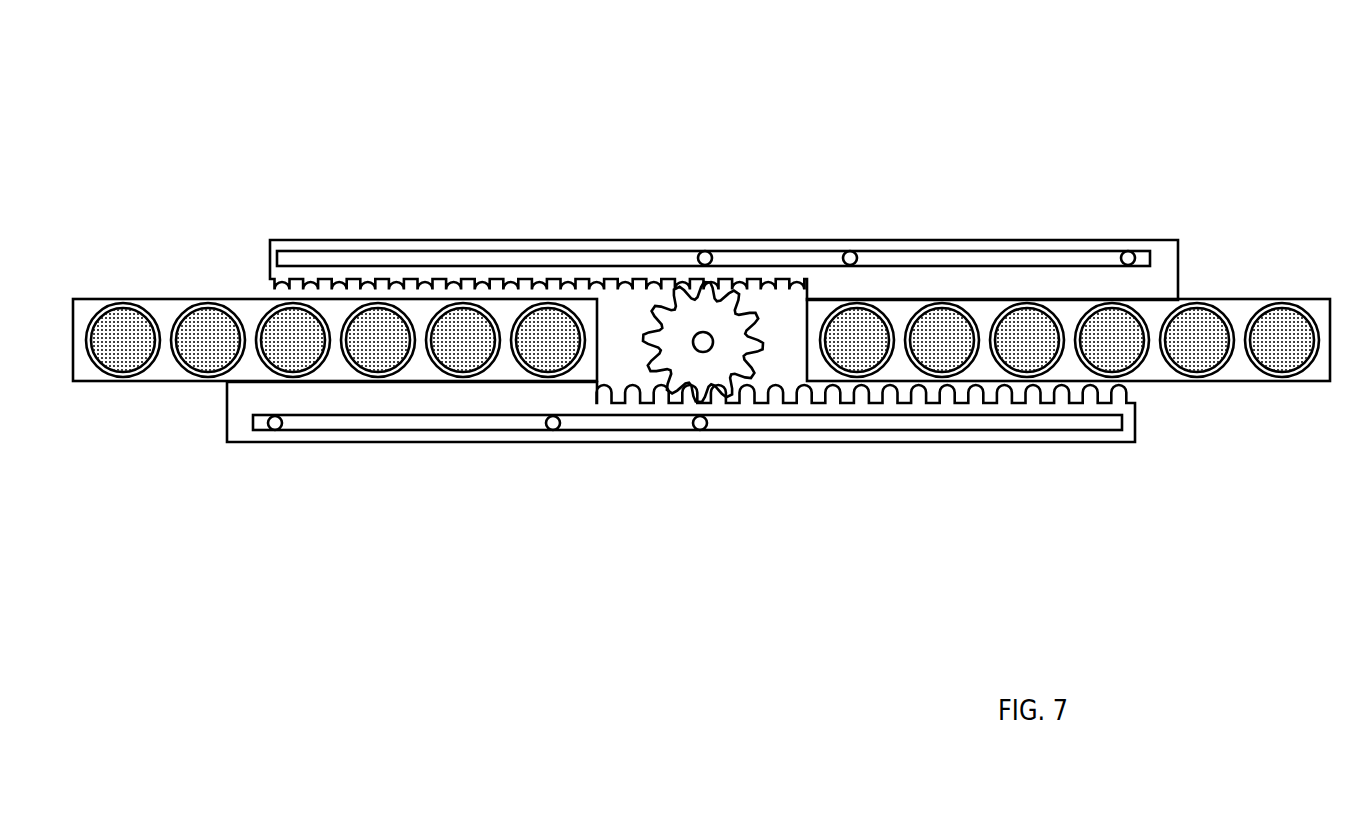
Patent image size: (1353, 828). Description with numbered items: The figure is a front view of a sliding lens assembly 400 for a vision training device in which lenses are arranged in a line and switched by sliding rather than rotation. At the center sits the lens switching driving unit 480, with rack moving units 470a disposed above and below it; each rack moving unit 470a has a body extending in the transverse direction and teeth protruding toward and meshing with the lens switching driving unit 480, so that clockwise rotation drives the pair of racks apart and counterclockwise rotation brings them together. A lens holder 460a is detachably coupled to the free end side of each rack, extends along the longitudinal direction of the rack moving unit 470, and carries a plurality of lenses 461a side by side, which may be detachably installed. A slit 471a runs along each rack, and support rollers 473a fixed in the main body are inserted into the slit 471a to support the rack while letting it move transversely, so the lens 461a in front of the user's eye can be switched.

The sliding lens assembly 400 is at (240, 136).
The lens holder 460a is at (76, 299).
The lens 461a is at (125, 352).
The rack moving unit 470 is at (393, 240).
The rack moving unit 470a is at (1008, 442).
The slit 471a is at (952, 250).
The support roller 473a is at (704, 252).
The lens switching driving unit 480 is at (680, 320).